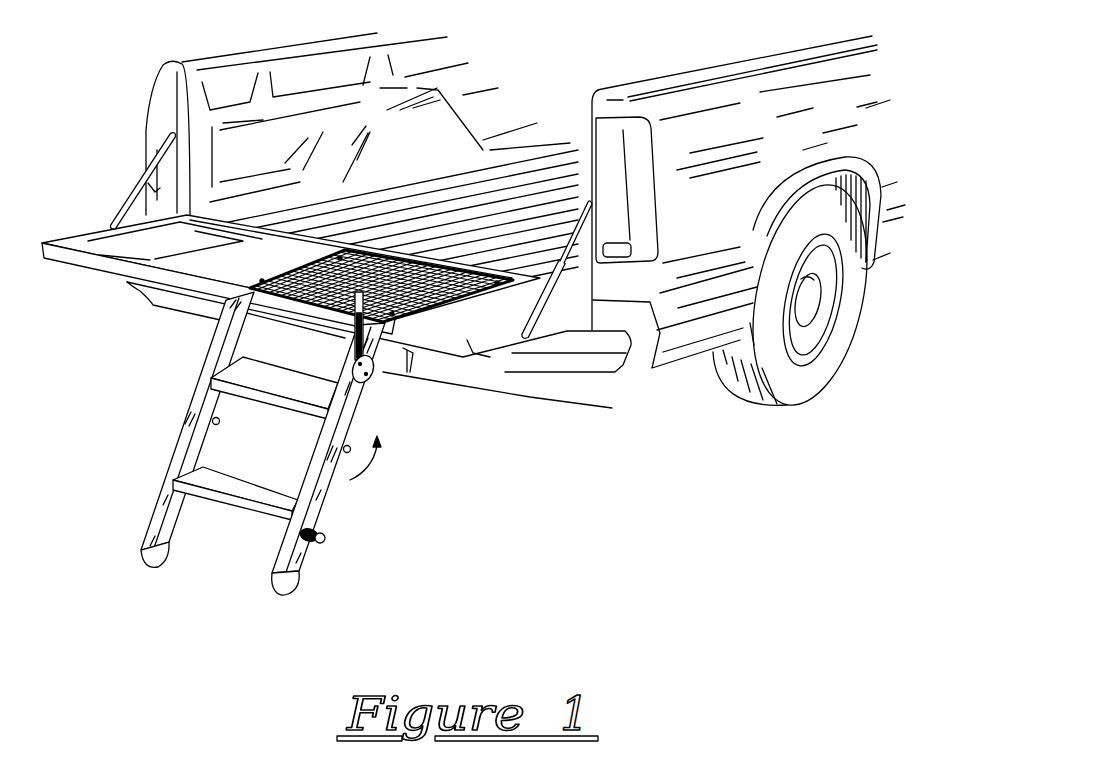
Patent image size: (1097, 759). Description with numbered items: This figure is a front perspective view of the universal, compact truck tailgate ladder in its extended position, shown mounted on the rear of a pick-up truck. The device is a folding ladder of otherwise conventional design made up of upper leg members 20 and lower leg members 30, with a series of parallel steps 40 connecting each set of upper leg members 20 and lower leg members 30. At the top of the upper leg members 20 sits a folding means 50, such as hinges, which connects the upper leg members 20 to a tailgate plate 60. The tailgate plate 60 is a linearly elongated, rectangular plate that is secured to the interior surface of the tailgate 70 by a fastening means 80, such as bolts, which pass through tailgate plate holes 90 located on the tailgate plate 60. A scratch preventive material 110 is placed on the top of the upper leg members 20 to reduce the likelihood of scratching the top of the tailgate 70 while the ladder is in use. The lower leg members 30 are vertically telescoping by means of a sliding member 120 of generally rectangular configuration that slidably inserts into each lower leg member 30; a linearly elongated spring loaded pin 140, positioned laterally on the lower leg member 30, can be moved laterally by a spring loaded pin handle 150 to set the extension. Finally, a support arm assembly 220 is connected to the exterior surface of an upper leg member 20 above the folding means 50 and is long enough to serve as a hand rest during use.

The upper leg members 20 is at (274, 473).
The lower leg members 30 is at (312, 560).
The steps 40 is at (243, 395).
The folding means 50 is at (413, 313).
The tailgate plate 60 is at (406, 344).
The tailgate 70 is at (112, 272).
The fastening means 80 is at (457, 299).
The tailgate plate holes 90 is at (526, 338).
The scratch preventive material 110 is at (214, 341).
The sliding member 120 is at (145, 565).
The spring loaded pin 140 is at (320, 532).
The spring loaded pin handle 150 is at (323, 543).
The support arm assembly 220 is at (373, 378).